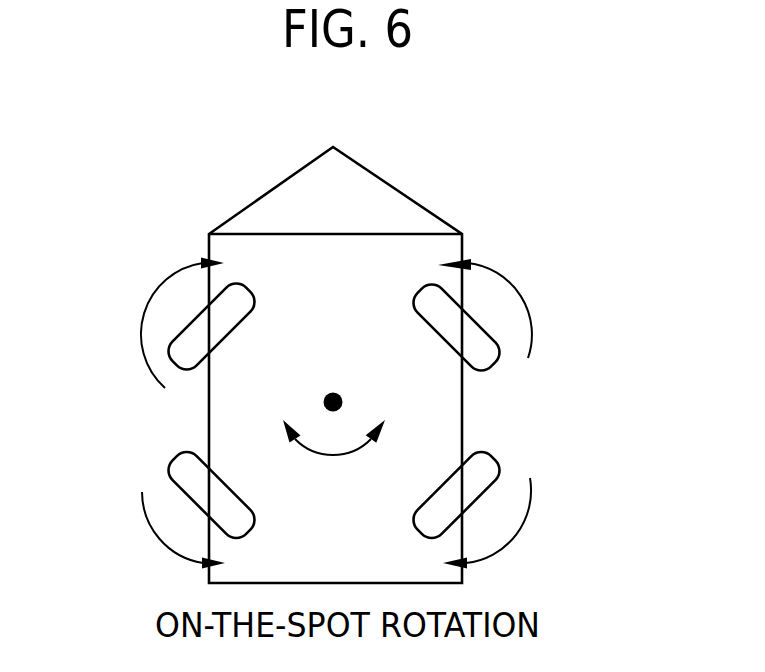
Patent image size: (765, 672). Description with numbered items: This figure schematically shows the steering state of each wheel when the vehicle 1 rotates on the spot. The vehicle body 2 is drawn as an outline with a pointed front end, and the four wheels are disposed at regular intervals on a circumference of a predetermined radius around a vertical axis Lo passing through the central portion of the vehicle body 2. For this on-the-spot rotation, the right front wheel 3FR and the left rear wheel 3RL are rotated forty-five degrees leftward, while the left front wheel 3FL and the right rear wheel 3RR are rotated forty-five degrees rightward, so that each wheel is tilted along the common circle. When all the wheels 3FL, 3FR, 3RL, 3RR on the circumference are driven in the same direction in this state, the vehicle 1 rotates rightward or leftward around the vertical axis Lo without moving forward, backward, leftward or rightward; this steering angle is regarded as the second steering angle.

The vehicle 1 is at (427, 163).
The vehicle body 2 is at (463, 410).
The left front wheel 3FL is at (195, 368).
The right front wheel 3FR is at (497, 364).
The left rear wheel 3RL is at (177, 461).
The right rear wheel 3RR is at (497, 464).
The vertical axis Lo is at (324, 396).